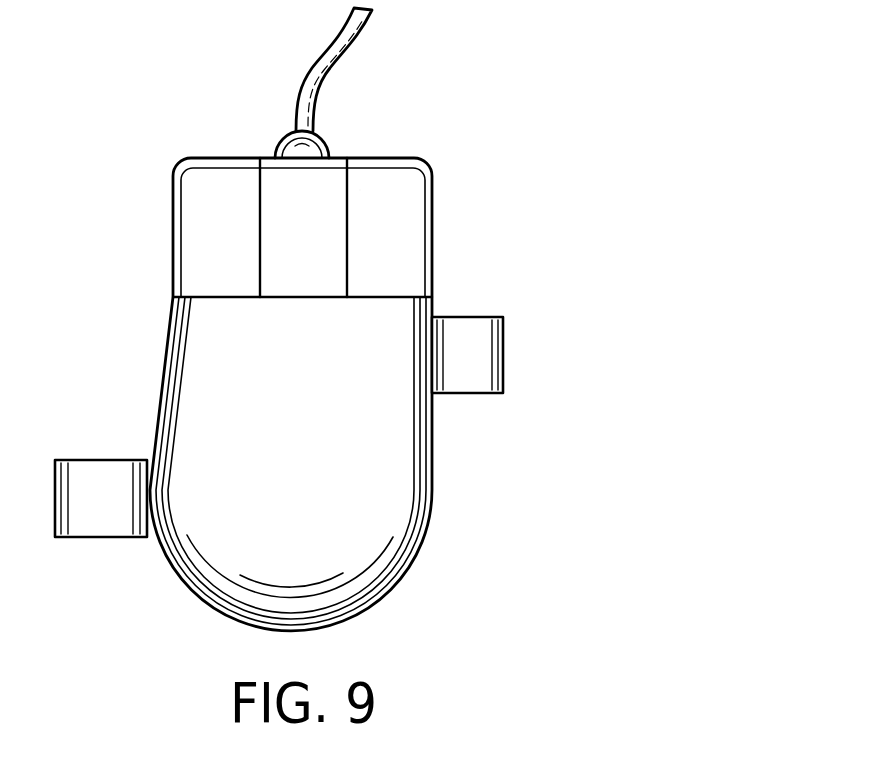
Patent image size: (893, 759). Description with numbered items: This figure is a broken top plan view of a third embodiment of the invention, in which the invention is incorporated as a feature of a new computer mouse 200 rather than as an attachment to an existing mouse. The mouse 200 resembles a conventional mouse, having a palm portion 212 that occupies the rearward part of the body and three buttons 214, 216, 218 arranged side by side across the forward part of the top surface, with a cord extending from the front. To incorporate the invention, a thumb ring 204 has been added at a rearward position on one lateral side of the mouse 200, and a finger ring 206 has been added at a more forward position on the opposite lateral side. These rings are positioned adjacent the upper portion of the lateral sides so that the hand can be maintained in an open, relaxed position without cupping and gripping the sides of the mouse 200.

The mouse 200 is at (497, 251).
The thumb ring 204 is at (87, 520).
The finger ring 206 is at (475, 388).
The palm portion 212 is at (342, 488).
The button 214 is at (250, 248).
The button 216 is at (334, 248).
The button 218 is at (415, 248).